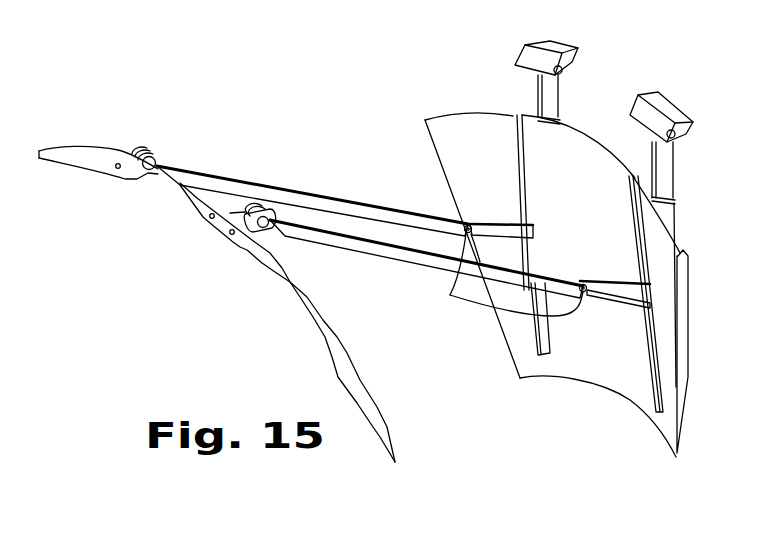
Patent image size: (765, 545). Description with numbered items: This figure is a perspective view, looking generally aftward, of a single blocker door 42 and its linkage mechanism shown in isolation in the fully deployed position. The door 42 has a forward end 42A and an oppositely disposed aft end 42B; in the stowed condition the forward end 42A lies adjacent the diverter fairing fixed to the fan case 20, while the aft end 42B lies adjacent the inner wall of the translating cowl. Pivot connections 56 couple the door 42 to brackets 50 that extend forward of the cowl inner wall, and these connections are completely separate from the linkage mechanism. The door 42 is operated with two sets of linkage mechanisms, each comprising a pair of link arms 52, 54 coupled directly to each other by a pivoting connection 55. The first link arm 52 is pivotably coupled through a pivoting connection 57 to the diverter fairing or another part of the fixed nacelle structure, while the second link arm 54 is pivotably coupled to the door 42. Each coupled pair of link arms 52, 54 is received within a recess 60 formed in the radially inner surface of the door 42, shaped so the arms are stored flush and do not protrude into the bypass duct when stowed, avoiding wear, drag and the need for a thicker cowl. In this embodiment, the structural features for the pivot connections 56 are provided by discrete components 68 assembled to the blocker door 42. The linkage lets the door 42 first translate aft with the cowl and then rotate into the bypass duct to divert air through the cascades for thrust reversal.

The fan case 20 is at (83, 155).
The blocker door 42 is at (517, 324).
The forward end of blocker door 42A is at (450, 117).
The aft end of blocker door 42B is at (604, 392).
The bracket 50 is at (551, 45).
The link arm 52 is at (340, 195).
The second link arm 54 is at (512, 230).
The pivoting connection 55 is at (452, 295).
The pivot connection 56 is at (563, 68).
The pivoting connection 57 is at (155, 147).
The recess 60 is at (517, 150).
The discrete component 68 is at (537, 98).